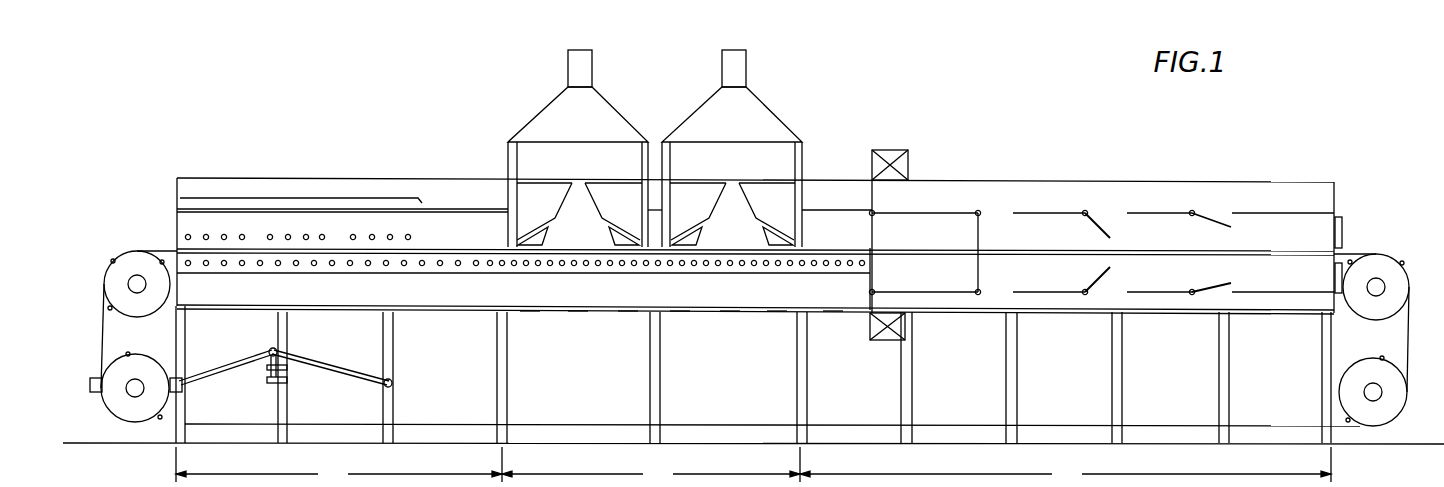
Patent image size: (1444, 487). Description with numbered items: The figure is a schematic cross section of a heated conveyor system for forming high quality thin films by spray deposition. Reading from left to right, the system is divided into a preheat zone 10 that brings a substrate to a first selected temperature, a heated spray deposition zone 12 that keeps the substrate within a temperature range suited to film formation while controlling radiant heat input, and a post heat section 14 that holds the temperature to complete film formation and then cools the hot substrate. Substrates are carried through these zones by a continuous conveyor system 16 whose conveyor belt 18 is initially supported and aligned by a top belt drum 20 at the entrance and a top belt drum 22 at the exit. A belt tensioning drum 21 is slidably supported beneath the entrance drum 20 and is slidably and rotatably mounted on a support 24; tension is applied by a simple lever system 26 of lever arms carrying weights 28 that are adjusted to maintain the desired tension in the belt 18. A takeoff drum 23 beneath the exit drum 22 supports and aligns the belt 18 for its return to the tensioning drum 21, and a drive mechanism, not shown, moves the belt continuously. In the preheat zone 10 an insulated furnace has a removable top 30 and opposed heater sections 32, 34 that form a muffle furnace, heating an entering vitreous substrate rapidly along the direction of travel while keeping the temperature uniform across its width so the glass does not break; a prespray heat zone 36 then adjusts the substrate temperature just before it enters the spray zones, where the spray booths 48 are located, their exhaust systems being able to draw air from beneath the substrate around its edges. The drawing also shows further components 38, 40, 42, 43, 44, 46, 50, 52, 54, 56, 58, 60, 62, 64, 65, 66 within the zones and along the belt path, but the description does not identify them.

The preheat zone 10 is at (339, 465).
The heated spray deposition zone 12 is at (651, 465).
The post heat section 14 is at (1065, 465).
The continuous conveyor system 16 is at (97, 335).
The conveyor belt 18 is at (102, 300).
The top belt drum 20 is at (132, 258).
The belt tensioning drum 21 is at (127, 410).
The top belt drum 22 is at (1385, 258).
The takeoff drum 23 is at (1395, 410).
The support 24 is at (92, 387).
The lever system 26 is at (230, 358).
The weights 28 is at (268, 381).
The removable top 30 is at (213, 178).
The heater section 32 is at (319, 196).
The heater section 34 is at (312, 308).
The prespray heat zone 36 is at (457, 308).
The lower nozzles 38 is at (206, 267).
The upper nozzles 40 is at (258, 242).
The first heater 42 is at (526, 314).
The second heater 43 is at (574, 314).
The third heater 44 is at (624, 314).
The plate 46 is at (832, 314).
The spray booths 48 is at (555, 105).
The discharge chute 50 is at (568, 222).
The deflector plate 52 is at (533, 243).
The hopper housing 54 is at (508, 165).
The guide rail 56 is at (1060, 182).
The rail segment 58 is at (1170, 213).
The bearing block 60 is at (908, 163).
The end guide 62 is at (1343, 222).
The pivot arm 64 is at (1212, 222).
The pivot arm 65 is at (1097, 218).
The connecting link 66 is at (982, 230).